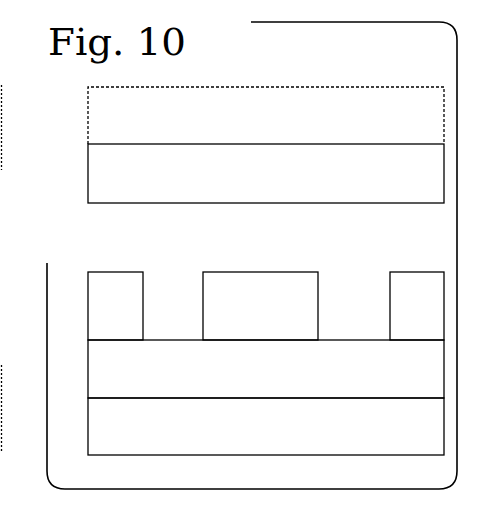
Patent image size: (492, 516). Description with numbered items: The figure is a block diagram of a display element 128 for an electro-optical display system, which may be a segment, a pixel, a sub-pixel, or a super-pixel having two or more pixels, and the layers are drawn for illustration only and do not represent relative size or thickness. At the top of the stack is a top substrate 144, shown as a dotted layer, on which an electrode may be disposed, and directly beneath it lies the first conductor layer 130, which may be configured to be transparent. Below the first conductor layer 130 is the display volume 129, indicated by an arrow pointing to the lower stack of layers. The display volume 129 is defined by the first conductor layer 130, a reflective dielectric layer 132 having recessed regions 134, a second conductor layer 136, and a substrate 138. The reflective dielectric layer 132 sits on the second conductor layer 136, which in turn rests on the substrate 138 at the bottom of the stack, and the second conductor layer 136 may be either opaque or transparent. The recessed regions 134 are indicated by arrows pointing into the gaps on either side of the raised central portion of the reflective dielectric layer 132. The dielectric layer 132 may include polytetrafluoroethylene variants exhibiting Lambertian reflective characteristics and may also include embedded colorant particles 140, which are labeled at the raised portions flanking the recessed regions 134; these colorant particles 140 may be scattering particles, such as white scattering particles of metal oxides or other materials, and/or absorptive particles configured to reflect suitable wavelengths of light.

The display element 128 is at (383, 61).
The display volume 129 is at (240, 325).
The first conductor layer 130 is at (288, 187).
The reflective dielectric layer 132 is at (288, 319).
The recessed regions 134 is at (342, 293).
The second conductor layer 136 is at (288, 382).
The substrate 138 is at (288, 439).
The colorant particles 140 is at (113, 276).
The top substrate 144 is at (288, 131).